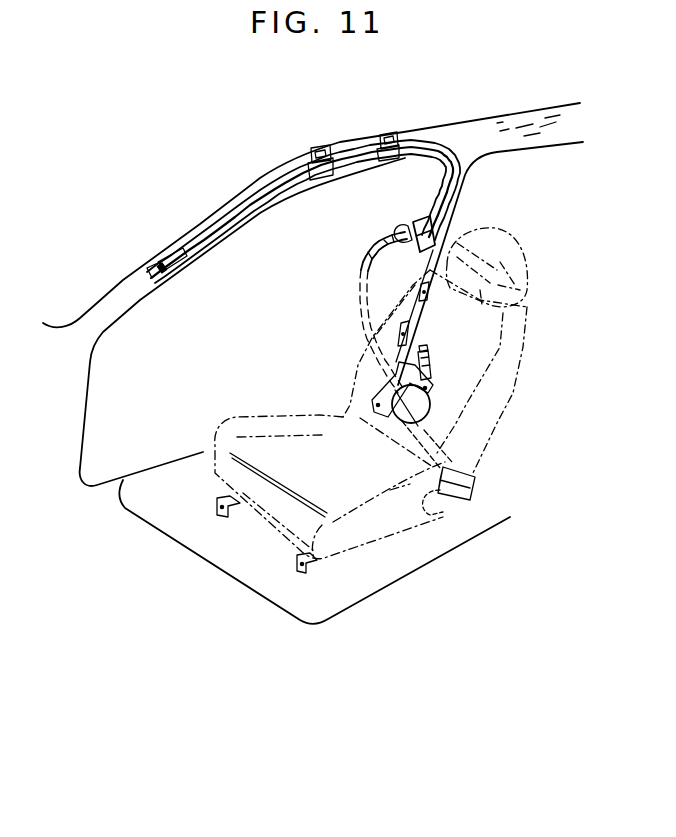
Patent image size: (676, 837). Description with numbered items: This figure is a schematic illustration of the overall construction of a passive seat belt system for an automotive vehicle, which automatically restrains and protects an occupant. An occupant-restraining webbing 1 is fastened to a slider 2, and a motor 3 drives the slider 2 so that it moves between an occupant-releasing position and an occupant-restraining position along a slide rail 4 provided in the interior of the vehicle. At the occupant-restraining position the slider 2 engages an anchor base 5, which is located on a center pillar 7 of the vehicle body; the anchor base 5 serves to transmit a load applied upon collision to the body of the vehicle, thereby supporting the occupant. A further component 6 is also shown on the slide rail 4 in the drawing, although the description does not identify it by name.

The occupant-restraining webbing 1 is at (363, 286).
The slider 2 is at (423, 217).
The motor 3 is at (413, 390).
The slide rail 4 is at (246, 200).
The anchor base 5 is at (437, 230).
The slider 6 is at (128, 290).
The center pillar 7 is at (463, 175).